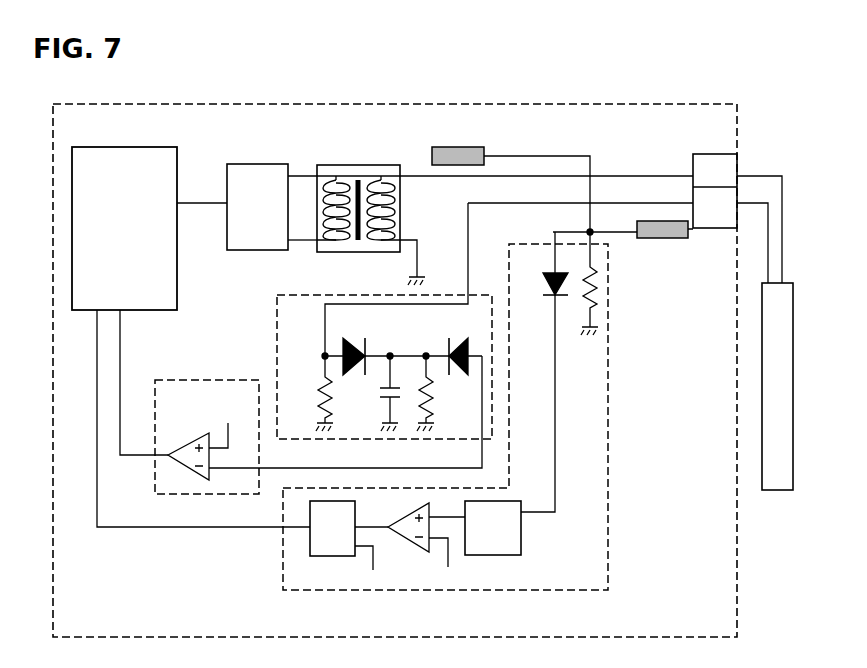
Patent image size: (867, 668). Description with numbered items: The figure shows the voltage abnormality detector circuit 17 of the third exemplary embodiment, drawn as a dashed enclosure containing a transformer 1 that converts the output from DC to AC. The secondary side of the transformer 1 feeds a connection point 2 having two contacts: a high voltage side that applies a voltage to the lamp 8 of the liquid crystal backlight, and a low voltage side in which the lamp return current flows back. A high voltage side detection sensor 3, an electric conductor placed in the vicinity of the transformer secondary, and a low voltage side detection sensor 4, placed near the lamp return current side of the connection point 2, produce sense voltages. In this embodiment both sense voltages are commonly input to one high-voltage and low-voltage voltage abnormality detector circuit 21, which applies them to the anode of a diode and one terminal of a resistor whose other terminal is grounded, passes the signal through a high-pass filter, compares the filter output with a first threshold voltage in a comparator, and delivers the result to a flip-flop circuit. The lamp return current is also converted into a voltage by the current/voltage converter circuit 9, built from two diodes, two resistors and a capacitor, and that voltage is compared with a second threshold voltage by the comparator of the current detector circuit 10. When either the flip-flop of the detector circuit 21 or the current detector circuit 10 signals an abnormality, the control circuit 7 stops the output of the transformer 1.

The transformer 1 is at (338, 164).
The connection point 2 is at (721, 166).
The high voltage side detection sensor 3 is at (455, 148).
The low voltage side detection sensor 4 is at (672, 222).
The control circuit 7 is at (130, 162).
The lamp 8 is at (770, 480).
The current/voltage converter circuit 9 is at (276, 310).
The current detector circuit 10 is at (165, 380).
The voltage abnormality detector circuit 17 is at (737, 594).
The high-voltage and low-voltage voltage abnormality detector circuit 21 is at (283, 570).